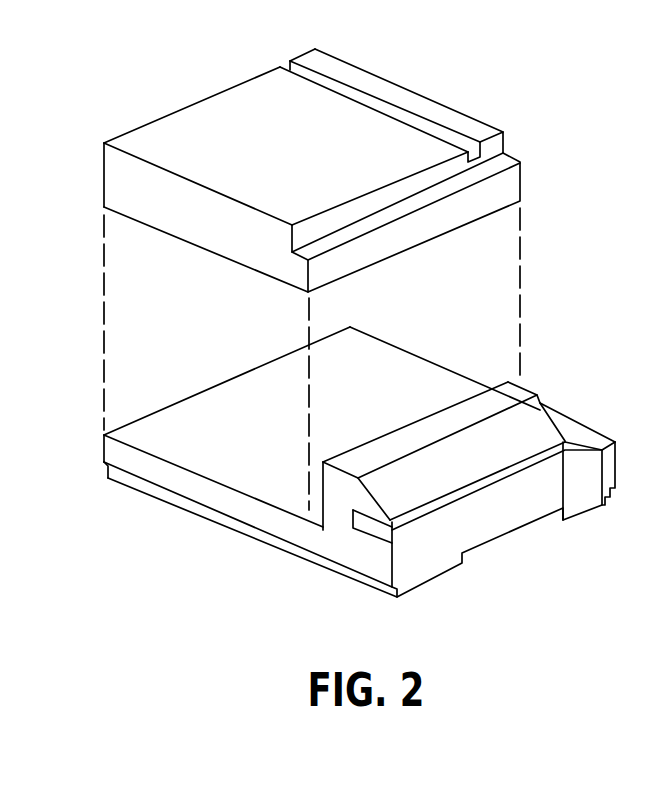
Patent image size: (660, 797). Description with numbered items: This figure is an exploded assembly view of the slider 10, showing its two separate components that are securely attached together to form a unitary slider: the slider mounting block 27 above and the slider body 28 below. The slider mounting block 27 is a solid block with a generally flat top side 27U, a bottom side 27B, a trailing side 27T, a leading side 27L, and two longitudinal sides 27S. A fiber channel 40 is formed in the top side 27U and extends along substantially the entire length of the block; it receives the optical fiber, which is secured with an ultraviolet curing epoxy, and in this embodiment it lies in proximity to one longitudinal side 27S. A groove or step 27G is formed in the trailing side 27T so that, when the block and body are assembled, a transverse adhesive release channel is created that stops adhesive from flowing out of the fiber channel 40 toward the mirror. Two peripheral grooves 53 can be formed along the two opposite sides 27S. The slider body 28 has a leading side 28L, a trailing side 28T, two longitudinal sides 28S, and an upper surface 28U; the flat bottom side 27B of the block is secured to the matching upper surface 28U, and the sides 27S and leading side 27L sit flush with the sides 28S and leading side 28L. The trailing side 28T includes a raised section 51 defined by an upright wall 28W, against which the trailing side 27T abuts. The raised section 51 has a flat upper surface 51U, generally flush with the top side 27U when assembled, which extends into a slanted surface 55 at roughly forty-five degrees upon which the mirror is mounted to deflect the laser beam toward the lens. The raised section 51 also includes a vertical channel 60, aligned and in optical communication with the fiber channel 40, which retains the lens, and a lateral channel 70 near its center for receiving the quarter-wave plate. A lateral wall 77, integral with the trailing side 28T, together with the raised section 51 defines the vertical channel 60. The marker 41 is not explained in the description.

The slider 10 is at (184, 34).
The slider mounting block 27 is at (441, 99).
The top side 27U is at (275, 158).
The leading side 27L is at (166, 115).
The longitudinal sides 27S is at (126, 184).
The bottom side 27B is at (164, 229).
The trailing side 27T is at (408, 239).
The groove or step 27G is at (513, 159).
The fiber channel 40 is at (290, 68).
The rail end 41 is at (500, 142).
The slider body 28 is at (136, 495).
The slider body upper surface 28U is at (283, 418).
The leading side 28L is at (255, 368).
The longitudinal sides 28S is at (428, 363).
The upright wall 28W is at (323, 500).
The trailing side 28T is at (365, 560).
The peripheral grooves 53 is at (250, 530).
The raised section 51 is at (539, 388).
The flat upper surface 51U is at (400, 435).
The slanted surface 55 is at (438, 471).
The lateral channel 70 is at (473, 498).
The lateral wall 77 is at (573, 427).
The vertical channel 60 is at (580, 483).